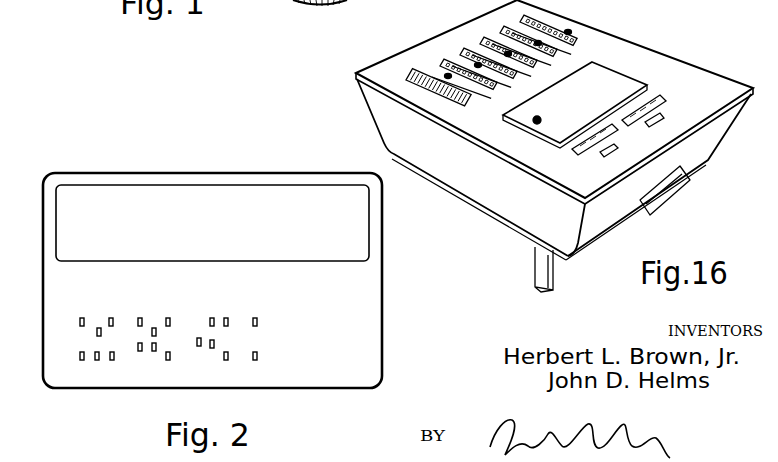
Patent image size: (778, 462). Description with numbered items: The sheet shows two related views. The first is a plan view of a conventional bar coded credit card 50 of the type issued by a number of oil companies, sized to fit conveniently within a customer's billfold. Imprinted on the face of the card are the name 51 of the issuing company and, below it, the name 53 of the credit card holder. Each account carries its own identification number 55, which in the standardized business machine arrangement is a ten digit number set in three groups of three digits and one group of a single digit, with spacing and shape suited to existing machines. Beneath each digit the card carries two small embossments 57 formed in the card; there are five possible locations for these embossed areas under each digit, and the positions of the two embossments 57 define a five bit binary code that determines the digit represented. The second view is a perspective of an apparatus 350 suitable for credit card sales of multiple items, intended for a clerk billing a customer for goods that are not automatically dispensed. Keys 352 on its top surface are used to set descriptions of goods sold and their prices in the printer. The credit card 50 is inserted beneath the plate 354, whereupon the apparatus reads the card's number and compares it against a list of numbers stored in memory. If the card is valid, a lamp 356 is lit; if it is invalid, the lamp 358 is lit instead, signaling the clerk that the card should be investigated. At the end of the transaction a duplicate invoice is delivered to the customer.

In FIG. 2, the bar coded credit card 50 is at (428, 309).
In FIG. 2, the name of the issuing company 51 is at (152, 205).
In FIG. 2, the name of the credit card holder 53 is at (76, 371).
In FIG. 2, the identification number 55 is at (76, 299).
In FIG. 2, the embossments 57 is at (78, 320).
In FIG. 16, the apparatus 350 is at (578, 25).
In FIG. 16, the keys 352 is at (446, 77).
In FIG. 16, the plate 354 is at (614, 82).
In FIG. 16, the lamp 356 is at (663, 116).
In FIG. 16, the lamp 358 is at (604, 154).